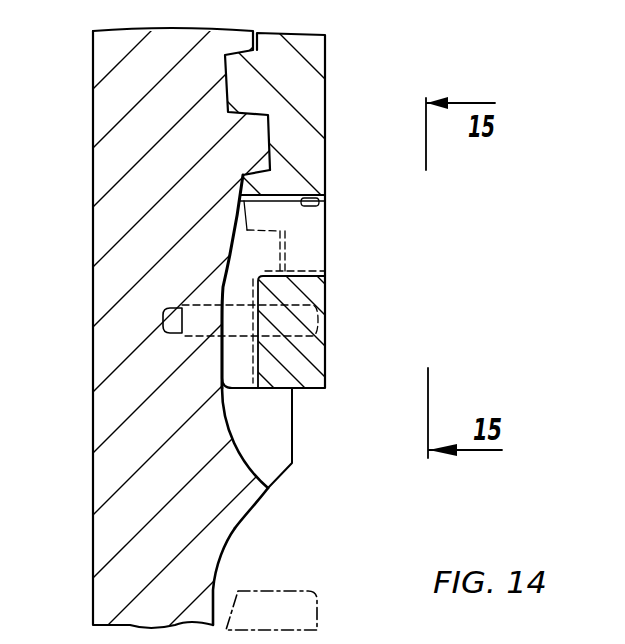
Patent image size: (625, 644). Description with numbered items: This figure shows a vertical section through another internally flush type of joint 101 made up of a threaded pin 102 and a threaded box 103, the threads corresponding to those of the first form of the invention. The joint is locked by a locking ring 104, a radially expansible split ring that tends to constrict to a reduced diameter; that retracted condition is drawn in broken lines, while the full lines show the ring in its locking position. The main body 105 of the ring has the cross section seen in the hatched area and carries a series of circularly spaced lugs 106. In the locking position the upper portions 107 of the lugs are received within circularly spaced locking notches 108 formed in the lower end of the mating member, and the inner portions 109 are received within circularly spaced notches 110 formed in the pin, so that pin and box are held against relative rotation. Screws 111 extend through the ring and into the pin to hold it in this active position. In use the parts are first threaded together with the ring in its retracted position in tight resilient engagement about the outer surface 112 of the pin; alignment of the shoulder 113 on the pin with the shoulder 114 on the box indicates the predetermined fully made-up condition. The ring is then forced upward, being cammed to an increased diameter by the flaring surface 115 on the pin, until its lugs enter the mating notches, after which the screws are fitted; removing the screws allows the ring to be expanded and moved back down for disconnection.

The joint 101 is at (374, 97).
The pin 102 is at (103, 130).
The box 103 is at (327, 70).
The locking ring 104 is at (325, 288).
The main body 105 is at (328, 358).
The lugs 106 is at (318, 225).
The upper portions 107 is at (328, 201).
The locking notches 108 is at (232, 213).
The inner portions 109 is at (236, 279).
The notches 110 is at (232, 412).
The screws 111 is at (192, 337).
The outer surface 112 is at (213, 604).
The shoulder 113 is at (270, 273).
The shoulder 114 is at (305, 267).
The flaring surface 115 is at (268, 490).